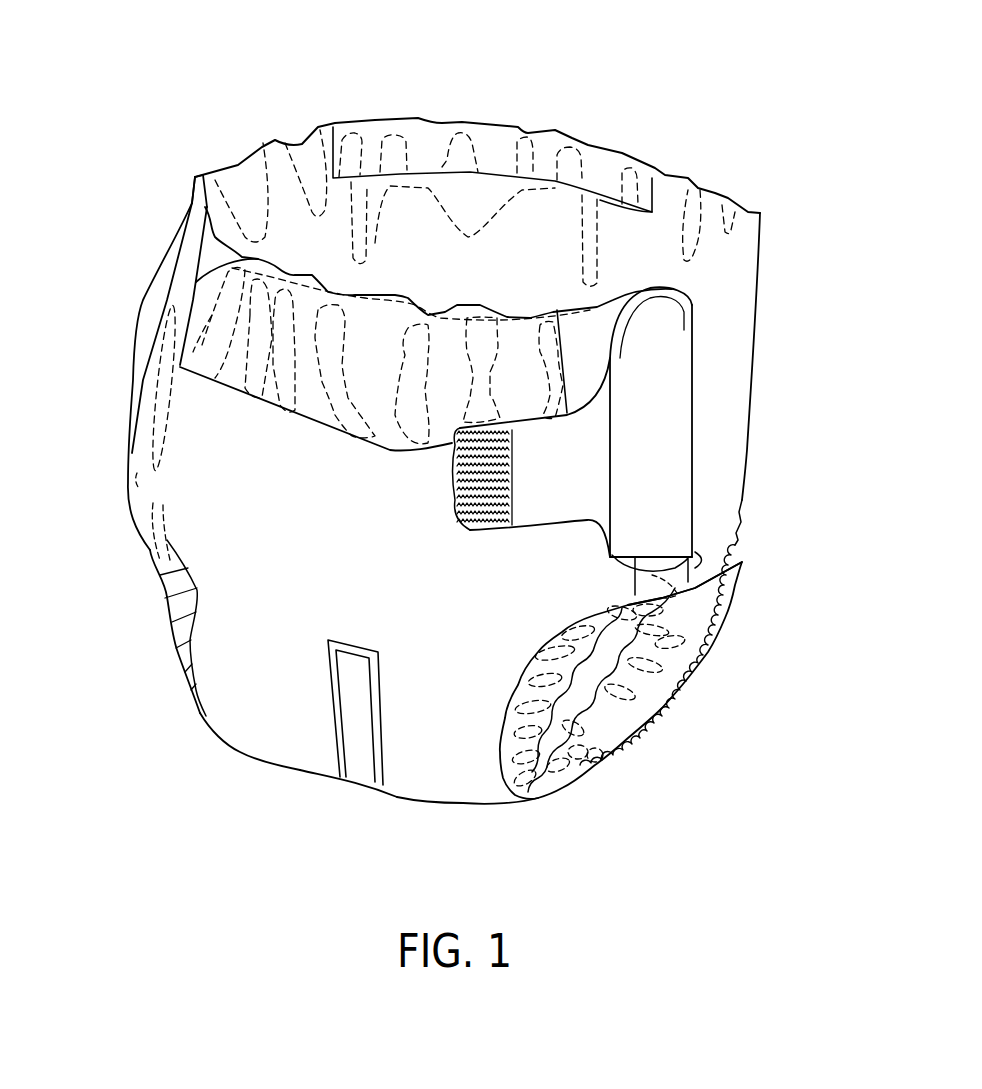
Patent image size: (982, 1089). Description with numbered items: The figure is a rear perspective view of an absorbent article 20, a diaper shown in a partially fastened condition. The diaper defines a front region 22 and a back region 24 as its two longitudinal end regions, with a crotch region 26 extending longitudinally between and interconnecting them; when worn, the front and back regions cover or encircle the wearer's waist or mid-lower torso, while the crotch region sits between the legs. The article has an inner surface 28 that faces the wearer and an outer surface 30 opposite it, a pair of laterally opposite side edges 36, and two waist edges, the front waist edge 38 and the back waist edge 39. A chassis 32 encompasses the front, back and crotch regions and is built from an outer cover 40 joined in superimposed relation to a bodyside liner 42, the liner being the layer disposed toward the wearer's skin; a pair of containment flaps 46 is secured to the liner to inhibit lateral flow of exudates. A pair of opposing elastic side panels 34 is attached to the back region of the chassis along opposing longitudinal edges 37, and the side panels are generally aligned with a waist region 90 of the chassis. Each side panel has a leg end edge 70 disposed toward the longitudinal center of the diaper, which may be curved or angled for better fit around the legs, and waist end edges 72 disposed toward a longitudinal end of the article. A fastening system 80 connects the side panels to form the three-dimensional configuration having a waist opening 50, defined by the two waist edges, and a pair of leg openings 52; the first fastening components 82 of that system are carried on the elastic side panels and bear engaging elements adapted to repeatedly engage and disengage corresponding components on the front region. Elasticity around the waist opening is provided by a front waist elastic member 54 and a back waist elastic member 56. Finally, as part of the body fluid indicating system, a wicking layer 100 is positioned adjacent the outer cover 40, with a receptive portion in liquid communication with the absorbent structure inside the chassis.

The absorbent article 20 is at (182, 145).
The front region 22 is at (770, 350).
The back region 24 is at (335, 586).
The crotch region 26 is at (470, 773).
The inner surface 28 is at (535, 280).
The outer surface 30 is at (233, 510).
The chassis 32 is at (178, 388).
The elastic side panels 34 is at (192, 192).
The side edges 36 is at (180, 670).
The longitudinal edges 37 is at (170, 290).
The front waist edge 38 is at (560, 128).
The back waist edge 39 is at (388, 292).
The outer cover 40 is at (247, 683).
The bodyside liner 42 is at (617, 213).
The containment flaps 46 is at (682, 638).
The waist opening 50 is at (391, 98).
The leg openings 52 is at (610, 723).
The front waist elastic member 54 is at (420, 120).
The back waist elastic member 56 is at (302, 403).
The leg end edge 70 is at (557, 628).
The waist end edges 72 is at (630, 295).
The fastening system 80 is at (764, 423).
The first fastening components 82 is at (468, 527).
The waist region 90 is at (240, 410).
The wicking layer 100 is at (360, 767).